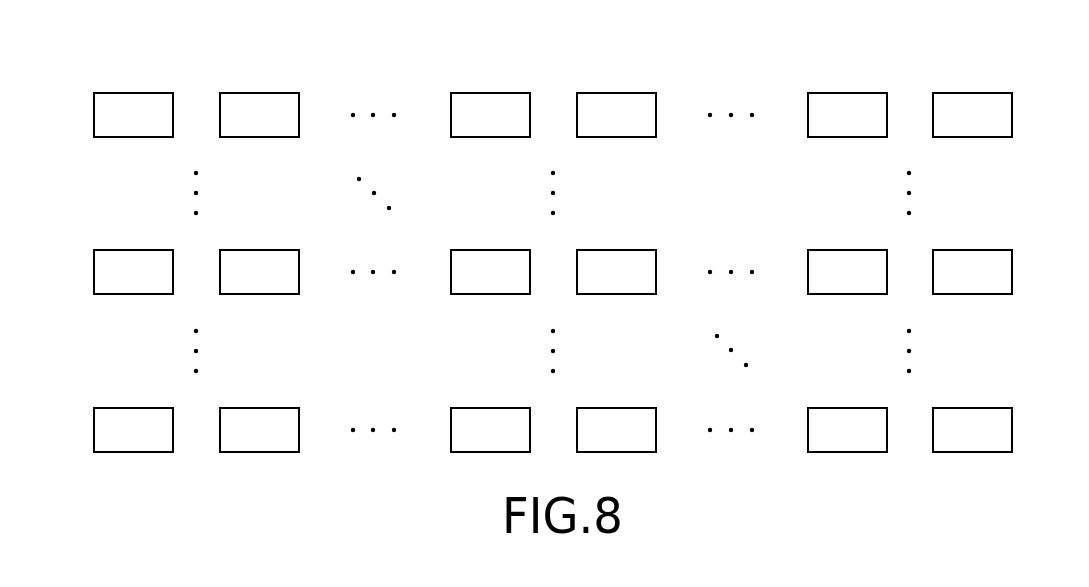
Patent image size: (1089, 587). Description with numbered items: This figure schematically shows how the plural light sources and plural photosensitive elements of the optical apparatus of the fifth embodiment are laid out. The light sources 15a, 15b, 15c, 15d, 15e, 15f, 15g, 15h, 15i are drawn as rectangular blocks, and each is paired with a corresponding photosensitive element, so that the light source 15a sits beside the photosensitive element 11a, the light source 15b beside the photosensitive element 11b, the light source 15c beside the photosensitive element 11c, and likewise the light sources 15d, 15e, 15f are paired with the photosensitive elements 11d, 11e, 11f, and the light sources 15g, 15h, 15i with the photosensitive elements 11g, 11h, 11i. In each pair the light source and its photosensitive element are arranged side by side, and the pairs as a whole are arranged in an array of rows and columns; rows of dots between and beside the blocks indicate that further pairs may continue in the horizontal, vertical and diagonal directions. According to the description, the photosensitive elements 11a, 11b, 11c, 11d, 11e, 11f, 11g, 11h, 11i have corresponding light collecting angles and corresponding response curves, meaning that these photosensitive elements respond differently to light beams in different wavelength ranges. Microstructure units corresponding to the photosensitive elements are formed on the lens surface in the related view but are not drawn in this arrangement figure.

The light source 15a is at (141, 108).
The photosensitive element 11a is at (268, 107).
The light source 15b is at (498, 108).
The photosensitive element 11b is at (625, 107).
The light source 15c is at (855, 108).
The photosensitive element 11c is at (981, 107).
The light source 15d is at (141, 265).
The photosensitive element 11d is at (268, 264).
The light source 15e is at (498, 265).
The photosensitive element 11e is at (625, 264).
The light source 15f is at (855, 265).
The photosensitive element 11f is at (981, 264).
The light source 15g is at (141, 423).
The photosensitive element 11g is at (268, 422).
The light source 15h is at (498, 423).
The photosensitive element 11h is at (625, 422).
The light source 15i is at (855, 423).
The photosensitive element 11i is at (981, 422).